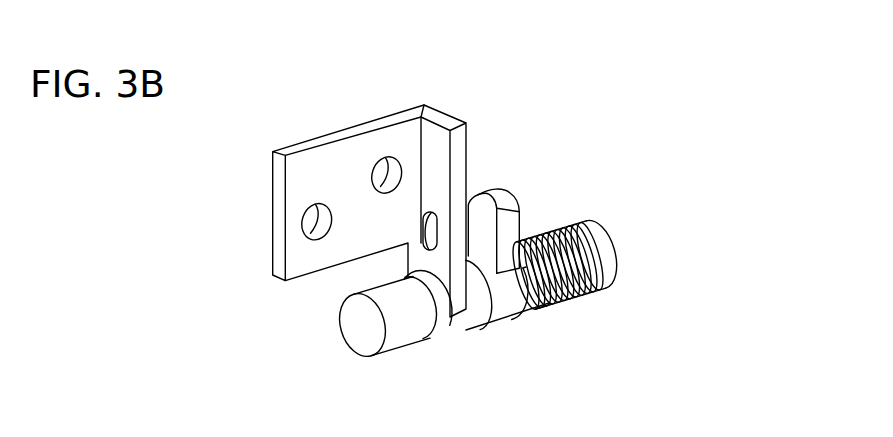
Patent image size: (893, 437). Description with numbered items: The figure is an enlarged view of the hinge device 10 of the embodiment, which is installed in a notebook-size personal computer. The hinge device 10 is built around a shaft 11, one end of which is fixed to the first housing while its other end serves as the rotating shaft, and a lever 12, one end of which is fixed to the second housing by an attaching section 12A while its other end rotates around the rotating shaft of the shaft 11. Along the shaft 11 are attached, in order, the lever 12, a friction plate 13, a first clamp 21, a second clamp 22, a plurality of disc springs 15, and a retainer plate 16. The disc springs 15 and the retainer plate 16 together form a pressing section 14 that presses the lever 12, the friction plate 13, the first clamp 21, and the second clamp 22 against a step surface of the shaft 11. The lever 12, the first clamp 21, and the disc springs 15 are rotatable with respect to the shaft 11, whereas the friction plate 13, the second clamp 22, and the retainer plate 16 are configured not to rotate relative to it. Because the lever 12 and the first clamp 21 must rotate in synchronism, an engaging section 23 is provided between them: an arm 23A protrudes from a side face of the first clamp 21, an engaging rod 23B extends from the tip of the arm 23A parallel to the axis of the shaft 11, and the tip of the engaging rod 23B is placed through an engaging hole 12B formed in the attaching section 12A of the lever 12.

The hinge device 10 is at (677, 101).
The shaft 11 is at (378, 290).
The lever 12 is at (444, 311).
The attaching section 12A is at (308, 180).
The engaging hole 12B is at (425, 212).
The friction plate 13 is at (488, 324).
The pressing section 14 is at (687, 184).
The disc springs 15 is at (552, 237).
The retainer plate 16 is at (601, 246).
The first clamp 21 is at (533, 306).
The second clamp 22 is at (547, 311).
The engaging section 23 is at (593, 147).
The arm 23A is at (506, 231).
The engaging rod 23B is at (478, 216).